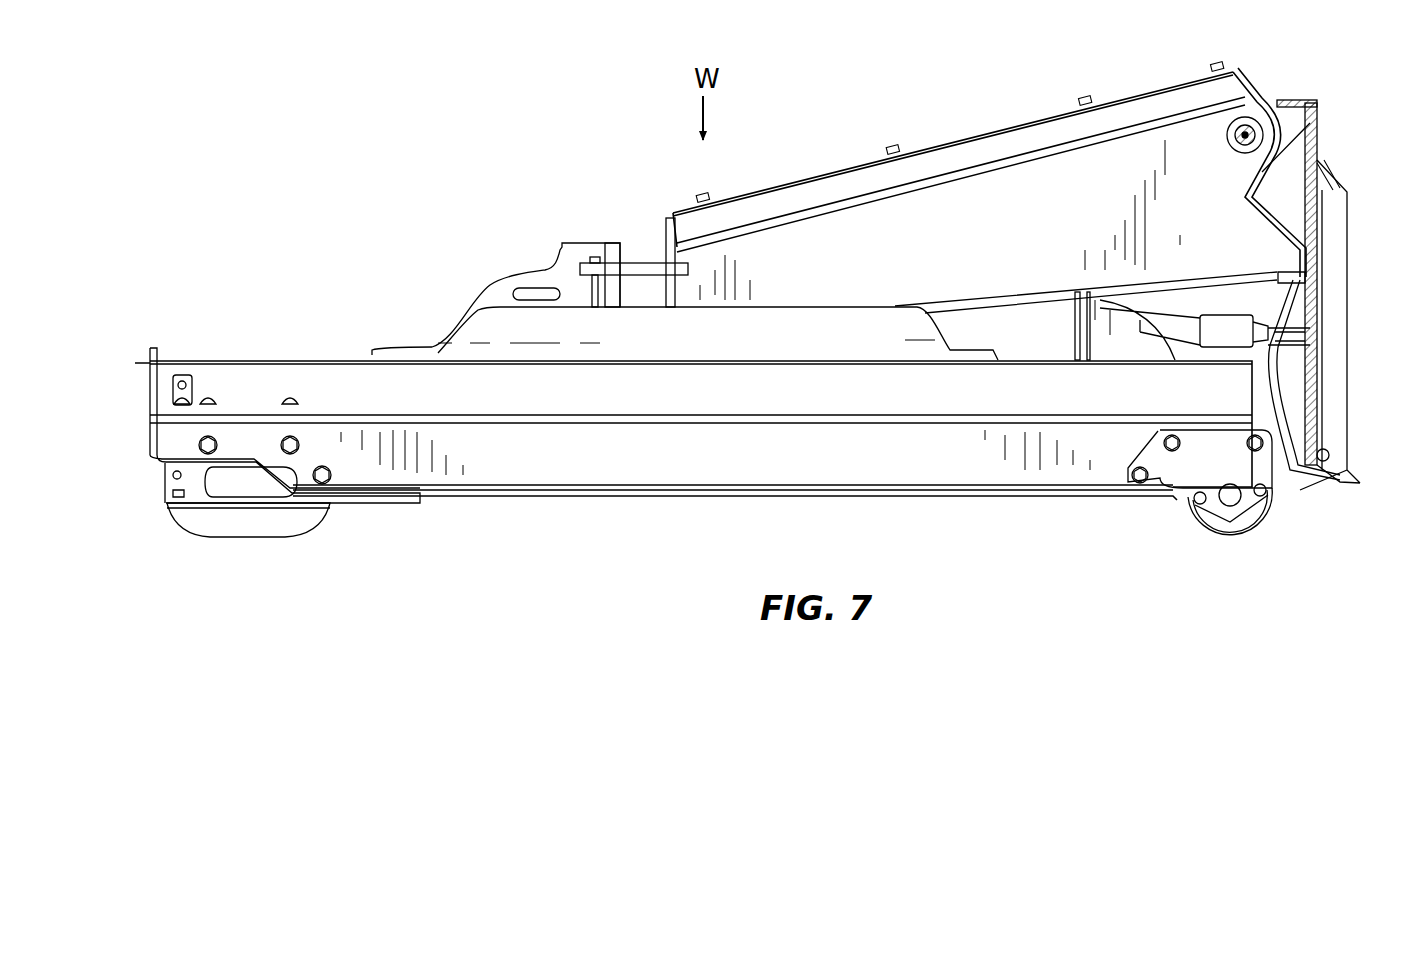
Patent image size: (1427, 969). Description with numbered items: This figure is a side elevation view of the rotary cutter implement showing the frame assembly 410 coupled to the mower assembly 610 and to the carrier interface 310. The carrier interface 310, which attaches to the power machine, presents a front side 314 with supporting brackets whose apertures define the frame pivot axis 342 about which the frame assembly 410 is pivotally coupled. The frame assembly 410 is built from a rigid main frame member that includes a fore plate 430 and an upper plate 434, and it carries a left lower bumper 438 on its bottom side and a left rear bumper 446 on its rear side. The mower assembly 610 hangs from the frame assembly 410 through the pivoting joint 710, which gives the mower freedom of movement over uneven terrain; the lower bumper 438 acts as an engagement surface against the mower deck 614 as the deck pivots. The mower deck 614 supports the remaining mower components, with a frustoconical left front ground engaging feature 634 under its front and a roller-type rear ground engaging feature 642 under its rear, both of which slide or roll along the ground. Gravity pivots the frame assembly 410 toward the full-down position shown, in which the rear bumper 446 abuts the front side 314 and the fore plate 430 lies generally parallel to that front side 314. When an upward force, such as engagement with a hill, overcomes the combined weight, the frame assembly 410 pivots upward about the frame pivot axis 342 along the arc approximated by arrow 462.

The carrier interface 310 is at (1345, 150).
The front side 314 is at (1297, 397).
The frame pivot axis 342 is at (1246, 118).
The frame assembly 410 is at (940, 126).
The fore plate 430 is at (666, 228).
The upper plate 434 is at (1118, 97).
The left lower bumper 438 is at (1223, 347).
The left rear bumper 446 is at (1293, 350).
The arrow 462 is at (1203, 132).
The mower assembly 610 is at (216, 305).
The mower deck 614 is at (347, 387).
The left front ground engaging feature 634 is at (268, 540).
The rear ground engaging feature 642 is at (1258, 528).
The pivoting joint 710 is at (583, 208).